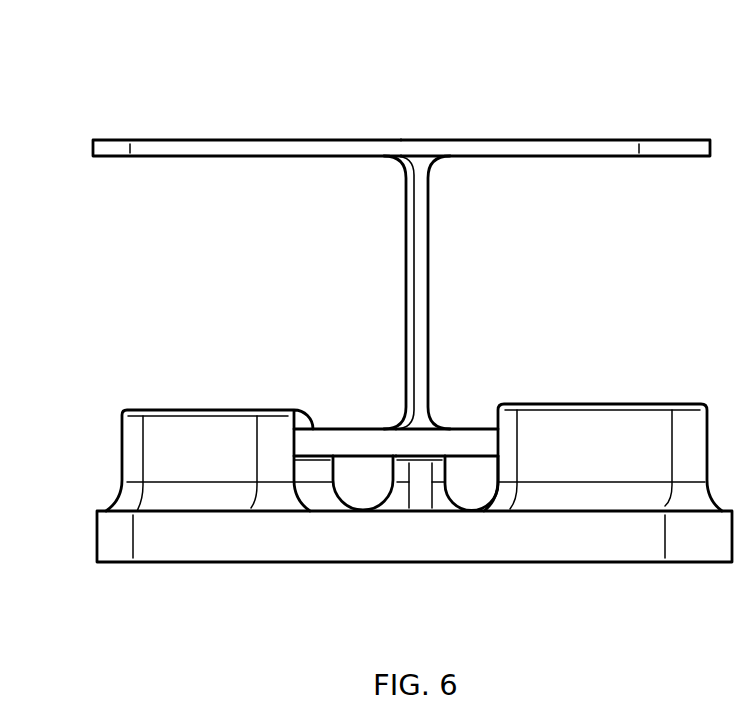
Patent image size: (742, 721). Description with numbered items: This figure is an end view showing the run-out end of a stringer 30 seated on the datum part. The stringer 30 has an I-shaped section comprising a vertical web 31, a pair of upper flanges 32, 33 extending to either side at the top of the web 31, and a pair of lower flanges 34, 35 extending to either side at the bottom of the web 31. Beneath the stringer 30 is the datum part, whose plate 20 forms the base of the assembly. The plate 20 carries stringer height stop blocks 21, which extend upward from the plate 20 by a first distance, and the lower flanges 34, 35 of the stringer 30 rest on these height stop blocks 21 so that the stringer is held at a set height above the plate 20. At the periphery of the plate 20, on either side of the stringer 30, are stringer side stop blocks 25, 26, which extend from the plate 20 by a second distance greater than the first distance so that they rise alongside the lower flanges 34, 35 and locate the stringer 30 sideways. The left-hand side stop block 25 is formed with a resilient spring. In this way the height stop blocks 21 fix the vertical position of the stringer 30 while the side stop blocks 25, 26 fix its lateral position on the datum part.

The plate 20 is at (555, 535).
The stringer height stop blocks 21 is at (417, 475).
The stringer side stop block 25 is at (615, 465).
The stringer side stop block 26 is at (183, 465).
The stringer 30 is at (401, 228).
The web 31 is at (417, 253).
The upper flange 32 is at (207, 156).
The upper flange 33 is at (573, 156).
The lower flange 34 is at (355, 438).
The lower flange 35 is at (477, 435).